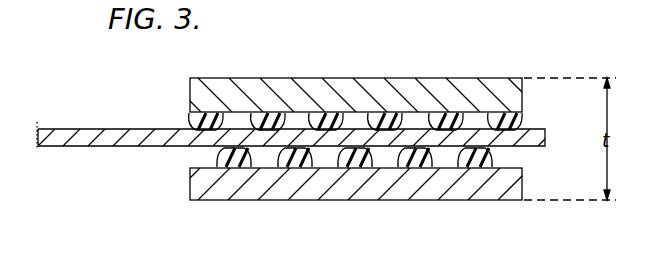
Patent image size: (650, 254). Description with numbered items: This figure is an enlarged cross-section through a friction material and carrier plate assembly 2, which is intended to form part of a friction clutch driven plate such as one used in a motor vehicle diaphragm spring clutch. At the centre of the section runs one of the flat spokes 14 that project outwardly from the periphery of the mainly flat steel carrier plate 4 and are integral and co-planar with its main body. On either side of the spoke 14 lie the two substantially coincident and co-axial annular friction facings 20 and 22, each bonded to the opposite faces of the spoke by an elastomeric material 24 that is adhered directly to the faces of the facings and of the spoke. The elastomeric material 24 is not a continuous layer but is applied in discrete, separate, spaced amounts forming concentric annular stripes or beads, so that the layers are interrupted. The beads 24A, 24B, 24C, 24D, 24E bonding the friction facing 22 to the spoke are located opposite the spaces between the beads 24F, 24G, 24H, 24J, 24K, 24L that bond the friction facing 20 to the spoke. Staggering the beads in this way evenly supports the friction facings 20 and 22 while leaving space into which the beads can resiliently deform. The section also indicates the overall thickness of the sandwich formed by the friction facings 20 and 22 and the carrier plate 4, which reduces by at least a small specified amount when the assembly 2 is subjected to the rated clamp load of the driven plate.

The friction material and carrier plate assembly 2 is at (115, 112).
The carrier plate 4 is at (54, 128).
The spokes 14 is at (546, 137).
The friction facing 20 is at (190, 95).
The friction facing 22 is at (190, 182).
The elastomeric material 24 is at (528, 119).
The stripe or bead 24A is at (220, 170).
The stripe or bead 24B is at (287, 170).
The stripe or bead 24C is at (335, 170).
The stripe or bead 24D is at (401, 158).
The stripe or bead 24E is at (455, 167).
The stripe or bead 24F is at (229, 112).
The stripe or bead 24G is at (290, 117).
The stripe or bead 24H is at (347, 112).
The stripe or bead 24J is at (407, 117).
The stripe or bead 24K is at (468, 115).
The stripe or bead 24L is at (491, 113).